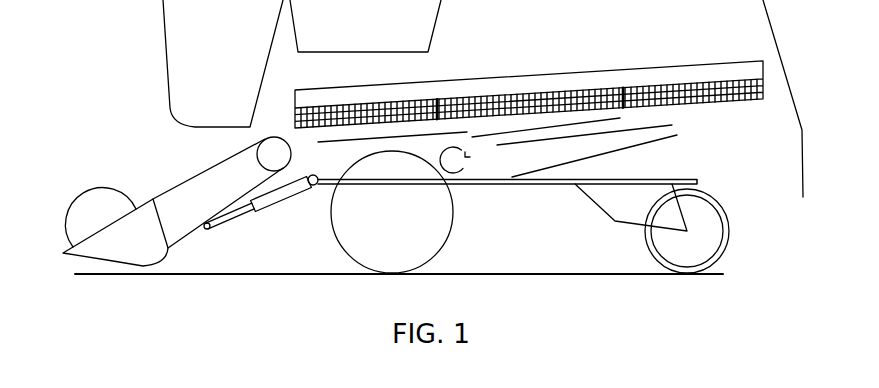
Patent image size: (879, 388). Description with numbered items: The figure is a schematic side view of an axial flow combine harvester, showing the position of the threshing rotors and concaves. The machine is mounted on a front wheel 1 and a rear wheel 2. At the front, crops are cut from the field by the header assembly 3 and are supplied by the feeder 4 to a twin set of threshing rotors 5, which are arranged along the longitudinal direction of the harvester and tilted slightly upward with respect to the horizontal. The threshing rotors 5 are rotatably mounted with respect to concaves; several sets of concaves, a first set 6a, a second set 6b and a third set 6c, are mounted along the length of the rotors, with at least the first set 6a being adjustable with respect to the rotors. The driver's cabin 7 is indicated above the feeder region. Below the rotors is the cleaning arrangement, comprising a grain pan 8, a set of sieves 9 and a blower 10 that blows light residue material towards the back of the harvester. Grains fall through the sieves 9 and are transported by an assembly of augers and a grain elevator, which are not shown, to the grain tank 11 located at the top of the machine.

The front wheel 1 is at (340, 237).
The rear wheel 2 is at (717, 235).
The header assembly 3 is at (85, 183).
The feeder 4 is at (192, 186).
The threshing rotors 5 is at (630, 76).
The first set of concaves 6a is at (360, 107).
The second set of concaves 6b is at (507, 100).
The third set of concaves 6c is at (705, 80).
The driver's cabin 7 is at (200, 64).
The grain pan 8 is at (342, 140).
The sieves 9 is at (620, 118).
The blower 10 is at (470, 157).
The grain tank 11 is at (349, 28).